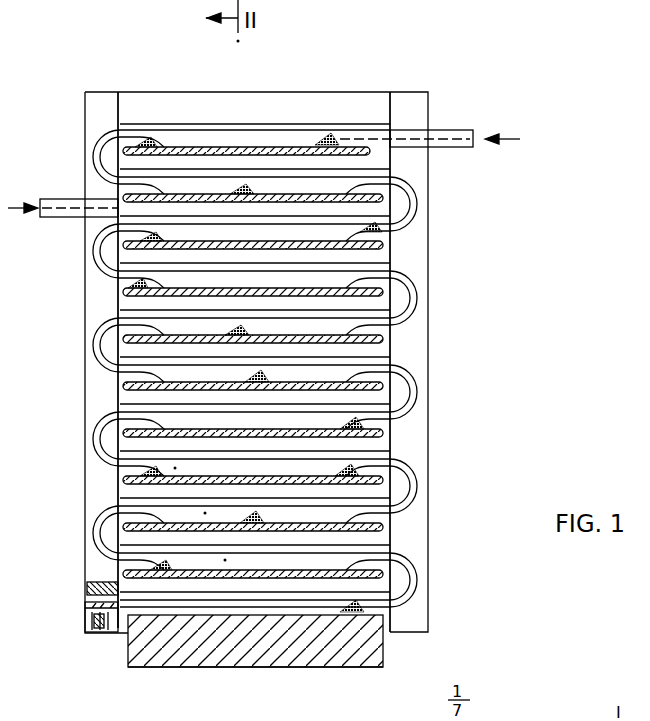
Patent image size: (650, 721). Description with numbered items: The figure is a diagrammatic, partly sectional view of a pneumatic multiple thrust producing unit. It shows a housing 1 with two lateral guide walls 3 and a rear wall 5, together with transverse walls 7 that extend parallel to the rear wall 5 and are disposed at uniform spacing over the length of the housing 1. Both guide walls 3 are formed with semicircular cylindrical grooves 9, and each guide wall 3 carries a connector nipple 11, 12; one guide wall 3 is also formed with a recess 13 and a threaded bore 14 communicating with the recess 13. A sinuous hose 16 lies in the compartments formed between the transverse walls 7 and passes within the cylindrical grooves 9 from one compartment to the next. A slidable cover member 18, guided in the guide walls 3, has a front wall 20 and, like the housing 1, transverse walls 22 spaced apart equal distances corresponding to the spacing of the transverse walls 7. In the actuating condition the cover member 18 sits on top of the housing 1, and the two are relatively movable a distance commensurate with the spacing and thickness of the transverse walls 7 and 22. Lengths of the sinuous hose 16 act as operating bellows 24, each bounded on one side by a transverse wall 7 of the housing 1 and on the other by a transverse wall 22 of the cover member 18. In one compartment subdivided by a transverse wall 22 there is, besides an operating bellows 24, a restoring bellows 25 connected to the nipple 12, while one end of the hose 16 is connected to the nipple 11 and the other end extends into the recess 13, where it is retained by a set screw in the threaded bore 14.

The housing 1 is at (381, 92).
The lateral guide walls 3 is at (97, 405).
The rear wall 5 is at (202, 101).
The transverse walls 7 is at (118, 313).
The semicircular cylindrical grooves 9 is at (417, 205).
The connector nipple 11 is at (465, 140).
The connector nipple 12 is at (52, 199).
The recess 13 is at (95, 590).
The threaded bore 14 is at (100, 634).
The sinuous hose 16 is at (295, 232).
The slidable cover member 18 is at (150, 656).
The front wall 20 is at (326, 667).
The transverse walls 22 is at (410, 320).
The operating bellows 24 is at (225, 560).
The restoring bellows 25 is at (178, 212).